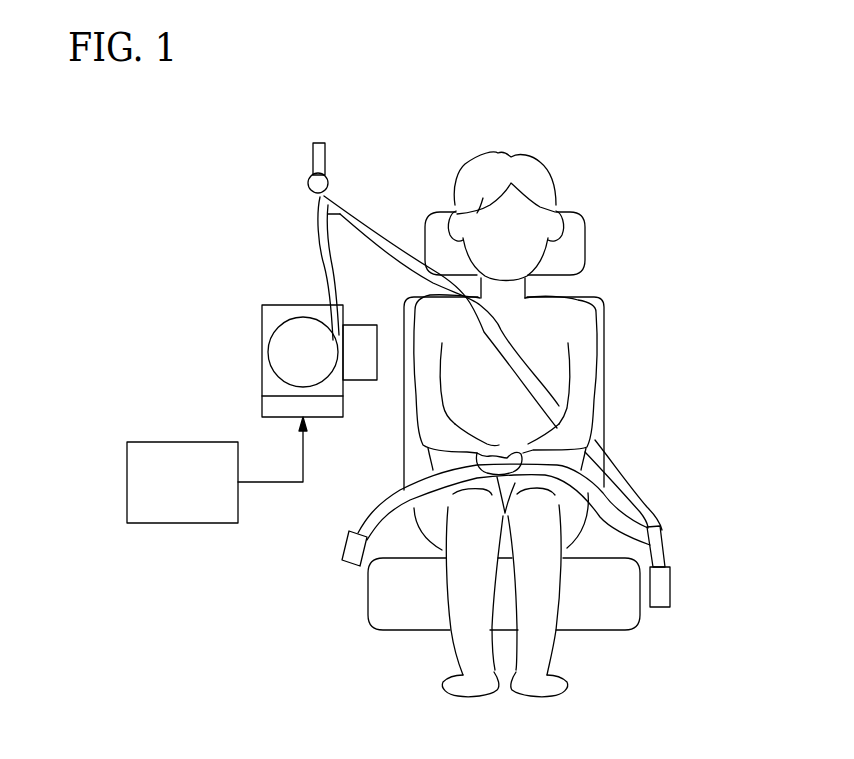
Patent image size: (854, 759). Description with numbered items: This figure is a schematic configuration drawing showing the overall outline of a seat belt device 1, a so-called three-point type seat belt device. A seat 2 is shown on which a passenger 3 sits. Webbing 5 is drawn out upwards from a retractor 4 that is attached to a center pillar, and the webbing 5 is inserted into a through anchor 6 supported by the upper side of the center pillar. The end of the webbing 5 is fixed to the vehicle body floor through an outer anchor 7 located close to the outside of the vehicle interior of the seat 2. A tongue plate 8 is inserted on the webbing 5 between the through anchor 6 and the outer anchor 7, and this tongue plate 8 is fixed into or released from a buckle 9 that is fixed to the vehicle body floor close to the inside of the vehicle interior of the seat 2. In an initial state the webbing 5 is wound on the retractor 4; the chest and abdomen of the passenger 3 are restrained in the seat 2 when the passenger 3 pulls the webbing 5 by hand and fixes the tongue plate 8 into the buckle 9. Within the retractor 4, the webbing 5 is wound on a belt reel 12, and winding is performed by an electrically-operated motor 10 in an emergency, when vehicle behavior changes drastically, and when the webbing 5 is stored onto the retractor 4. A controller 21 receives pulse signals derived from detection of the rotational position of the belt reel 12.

The seat belt device 1 is at (358, 163).
The seat 2 is at (603, 608).
The passenger 3 is at (545, 170).
The retractor 4 is at (302, 305).
The webbing 5 is at (630, 483).
The through anchor 6 is at (322, 202).
The outer anchor 7 is at (356, 549).
The tongue plate 8 is at (660, 557).
The buckle 9 is at (660, 588).
The electrically-operated motor 10 is at (330, 409).
The belt reel 12 is at (288, 355).
The controller 21 is at (183, 512).